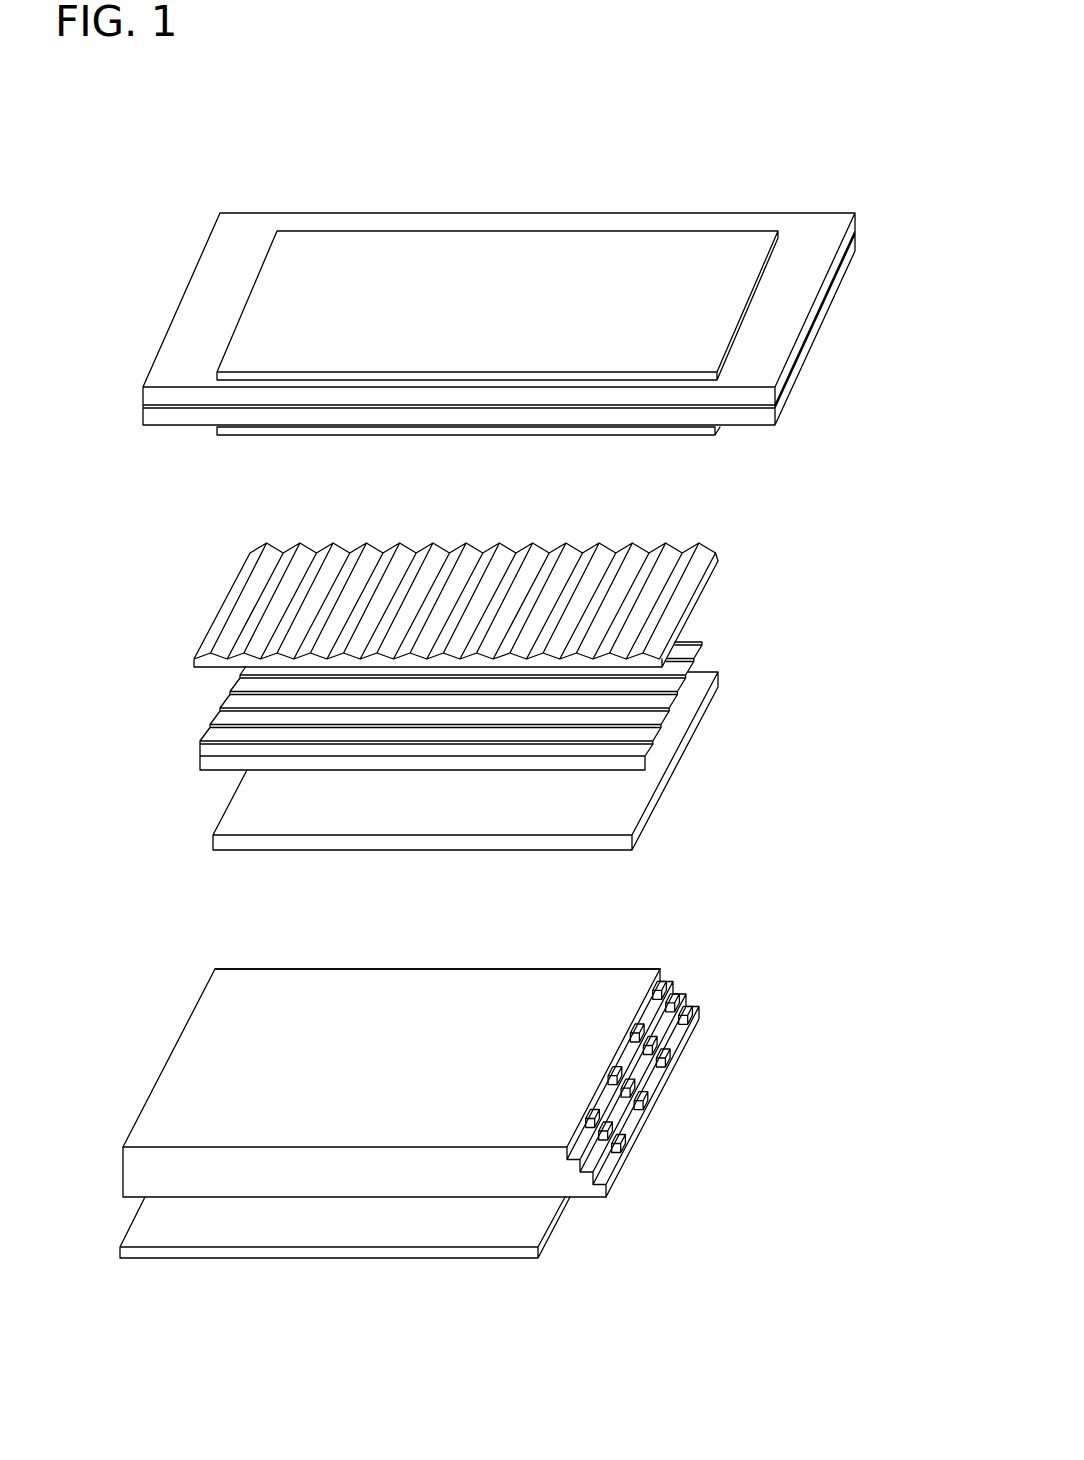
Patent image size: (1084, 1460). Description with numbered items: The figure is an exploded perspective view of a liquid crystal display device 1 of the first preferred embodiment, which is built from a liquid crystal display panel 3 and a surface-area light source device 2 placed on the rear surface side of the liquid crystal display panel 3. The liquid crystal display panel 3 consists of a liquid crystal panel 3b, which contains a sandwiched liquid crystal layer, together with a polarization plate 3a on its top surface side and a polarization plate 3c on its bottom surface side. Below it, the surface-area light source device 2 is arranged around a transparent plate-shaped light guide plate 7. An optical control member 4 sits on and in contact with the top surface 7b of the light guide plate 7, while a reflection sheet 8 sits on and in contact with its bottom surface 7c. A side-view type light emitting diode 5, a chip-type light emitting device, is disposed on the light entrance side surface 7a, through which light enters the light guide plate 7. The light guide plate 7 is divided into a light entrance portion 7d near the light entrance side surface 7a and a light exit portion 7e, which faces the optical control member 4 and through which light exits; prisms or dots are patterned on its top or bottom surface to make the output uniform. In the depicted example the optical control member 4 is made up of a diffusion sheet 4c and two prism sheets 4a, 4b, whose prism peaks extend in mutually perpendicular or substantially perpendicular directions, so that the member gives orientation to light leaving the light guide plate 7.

The liquid crystal display device 1 is at (509, 140).
The surface-area light source device 2 is at (860, 522).
The liquid crystal display panel 3 is at (885, 223).
The polarization plate 3a is at (272, 240).
The liquid crystal panel 3b is at (811, 212).
The polarization plate 3c is at (440, 434).
The optical control member 4 is at (181, 556).
The prism sheet 4a is at (706, 546).
The prism sheet 4b is at (703, 641).
The diffusion sheet 4c is at (718, 671).
The side-view type light emitting diode 5 is at (703, 1005).
The light guide plate 7 is at (607, 1198).
The light entrance side surface 7a is at (633, 1068).
The top surface 7b is at (168, 1122).
The bottom surface 7c is at (340, 1198).
The light entrance portion 7d is at (705, 957).
The light exit portion 7e is at (658, 958).
The reflection sheet 8 is at (465, 1258).